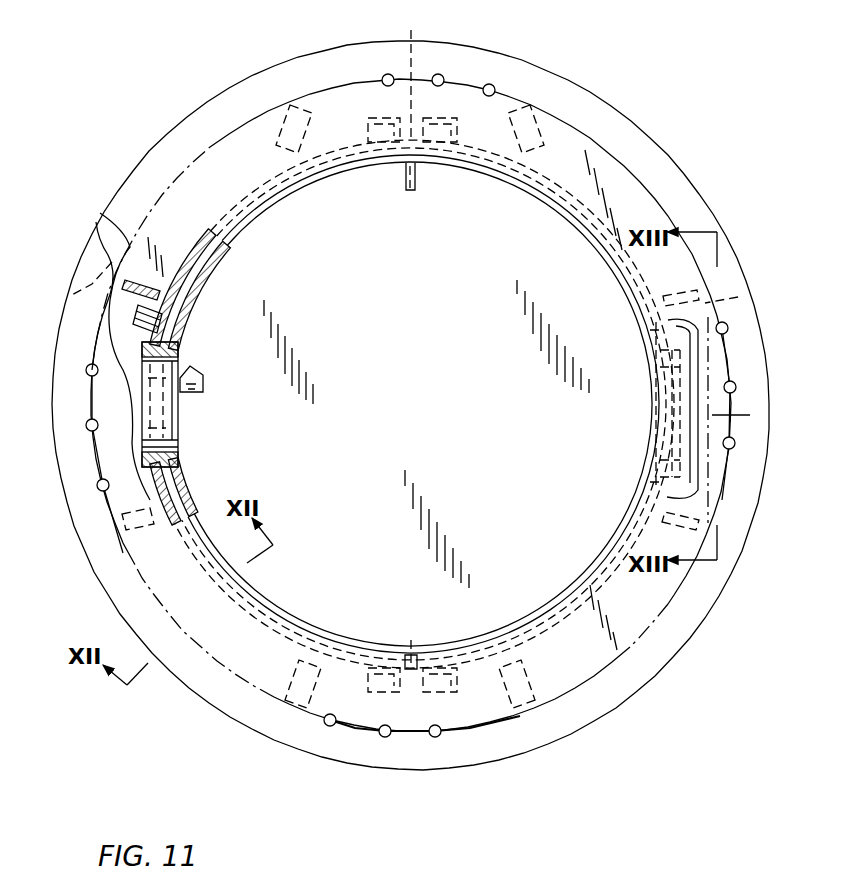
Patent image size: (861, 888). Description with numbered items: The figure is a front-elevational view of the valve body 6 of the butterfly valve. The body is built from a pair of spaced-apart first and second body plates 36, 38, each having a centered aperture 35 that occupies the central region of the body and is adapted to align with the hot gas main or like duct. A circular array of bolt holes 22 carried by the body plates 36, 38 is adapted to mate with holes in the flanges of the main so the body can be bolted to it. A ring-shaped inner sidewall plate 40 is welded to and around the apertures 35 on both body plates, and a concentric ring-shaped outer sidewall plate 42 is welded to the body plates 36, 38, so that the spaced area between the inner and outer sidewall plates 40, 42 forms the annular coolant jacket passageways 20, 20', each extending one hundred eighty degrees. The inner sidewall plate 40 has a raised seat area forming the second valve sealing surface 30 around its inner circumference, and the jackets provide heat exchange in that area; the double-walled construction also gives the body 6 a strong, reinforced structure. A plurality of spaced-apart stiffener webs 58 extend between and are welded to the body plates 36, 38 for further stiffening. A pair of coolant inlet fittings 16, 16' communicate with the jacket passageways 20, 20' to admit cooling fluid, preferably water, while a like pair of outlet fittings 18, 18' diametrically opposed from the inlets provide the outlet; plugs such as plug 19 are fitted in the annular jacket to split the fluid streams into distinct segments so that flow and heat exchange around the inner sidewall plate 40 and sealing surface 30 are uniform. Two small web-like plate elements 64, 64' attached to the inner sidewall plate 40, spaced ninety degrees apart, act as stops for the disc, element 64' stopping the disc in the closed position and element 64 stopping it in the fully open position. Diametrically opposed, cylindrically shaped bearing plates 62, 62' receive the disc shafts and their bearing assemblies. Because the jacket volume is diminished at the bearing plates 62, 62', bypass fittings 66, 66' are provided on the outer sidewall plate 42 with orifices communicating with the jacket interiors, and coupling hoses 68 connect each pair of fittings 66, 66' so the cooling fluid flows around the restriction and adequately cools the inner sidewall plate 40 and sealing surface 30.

The valve body 6 is at (606, 88).
The coolant inlet fitting 16 is at (487, 750).
The coolant inlet fitting 16' is at (343, 749).
The fluid outlet fitting 18 is at (467, 72).
The fluid outlet fitting 18' is at (340, 74).
The plug 19 is at (414, 664).
The fluid jacket 20 is at (488, 629).
The fluid jacket 20' is at (361, 640).
The bolt holes 22 is at (388, 74).
The second valve sealing surface 30 is at (600, 222).
The centered aperture 35 is at (430, 406).
The first body plate 36 is at (652, 138).
The second body plate 38 is at (120, 243).
The inner sidewall plate 40 is at (195, 322).
The outer sidewall plate 42 is at (190, 258).
The stiffener webs 58 is at (140, 276).
The bearing plate 62 is at (623, 406).
The bearing plate 62' is at (197, 404).
The web-like plate element 64 is at (217, 366).
The web-like plate element 64' is at (447, 192).
The bypass fitting 66 is at (420, 526).
The bypass fitting 66' is at (412, 296).
The coupling hose 68 is at (750, 415).